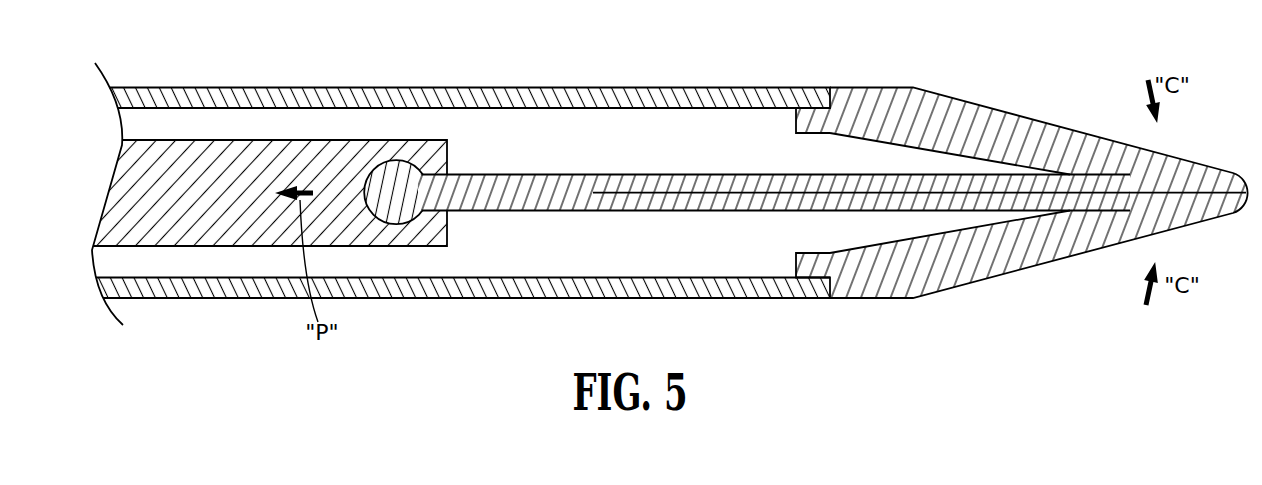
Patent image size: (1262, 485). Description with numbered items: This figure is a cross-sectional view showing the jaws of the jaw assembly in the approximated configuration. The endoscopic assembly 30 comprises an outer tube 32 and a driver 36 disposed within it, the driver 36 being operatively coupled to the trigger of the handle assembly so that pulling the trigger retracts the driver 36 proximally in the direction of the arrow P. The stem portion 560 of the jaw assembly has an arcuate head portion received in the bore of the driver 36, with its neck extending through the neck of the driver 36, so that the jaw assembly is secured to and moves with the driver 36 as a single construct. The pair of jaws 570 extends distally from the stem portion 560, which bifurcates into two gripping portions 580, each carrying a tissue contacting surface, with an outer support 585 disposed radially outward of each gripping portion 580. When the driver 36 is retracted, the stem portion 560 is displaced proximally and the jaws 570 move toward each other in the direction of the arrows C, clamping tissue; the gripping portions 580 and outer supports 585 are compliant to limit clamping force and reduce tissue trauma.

The endoscopic assembly 30 is at (455, 149).
The outer tube 32 is at (310, 98).
The driver 36 is at (207, 168).
The stem portion 560 is at (498, 192).
The pair of jaws 570 is at (1025, 161).
The outer support 585 is at (933, 107).
The gripping portion 580 is at (975, 185).